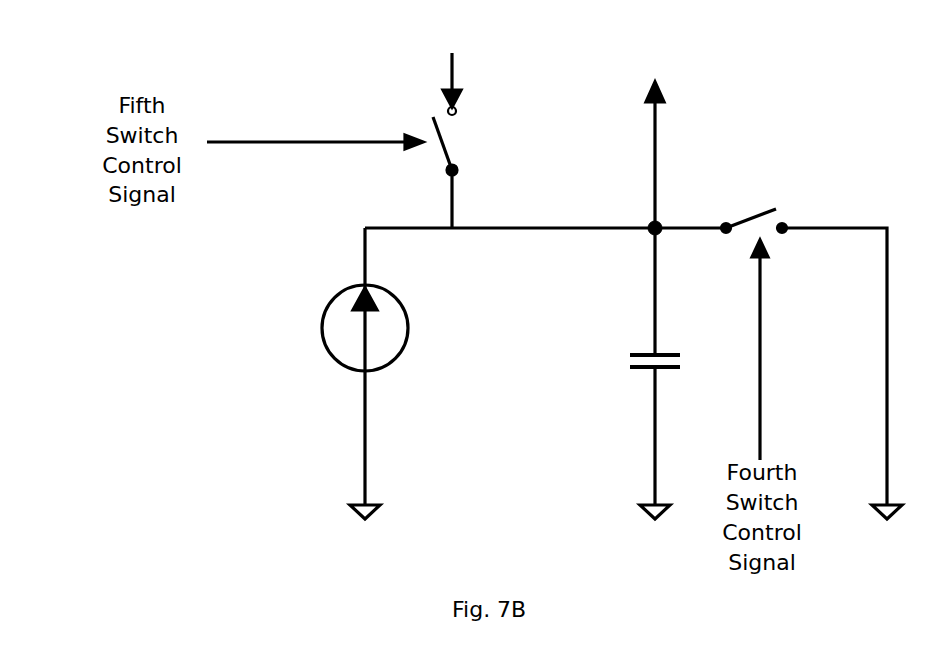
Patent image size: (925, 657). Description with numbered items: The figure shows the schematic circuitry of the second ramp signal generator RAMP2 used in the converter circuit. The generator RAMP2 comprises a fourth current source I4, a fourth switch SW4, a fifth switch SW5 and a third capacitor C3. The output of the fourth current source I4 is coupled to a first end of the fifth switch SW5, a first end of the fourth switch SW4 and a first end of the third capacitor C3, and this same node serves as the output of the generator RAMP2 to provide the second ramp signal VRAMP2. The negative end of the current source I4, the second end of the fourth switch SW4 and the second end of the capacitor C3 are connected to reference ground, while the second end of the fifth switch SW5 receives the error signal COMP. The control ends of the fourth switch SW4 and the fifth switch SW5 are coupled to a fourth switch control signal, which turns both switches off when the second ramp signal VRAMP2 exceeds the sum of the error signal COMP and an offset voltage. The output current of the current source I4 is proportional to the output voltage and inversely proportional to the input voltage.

The fourth current source I4 is at (339, 366).
The fifth switch SW5 is at (476, 140).
The fourth switch SW4 is at (754, 204).
The third capacitor C3 is at (631, 366).
The error signal COMP is at (495, 44).
The second ramp signal generator RAMP2 is at (717, 66).
The second ramp signal VRAMP2 is at (703, 158).